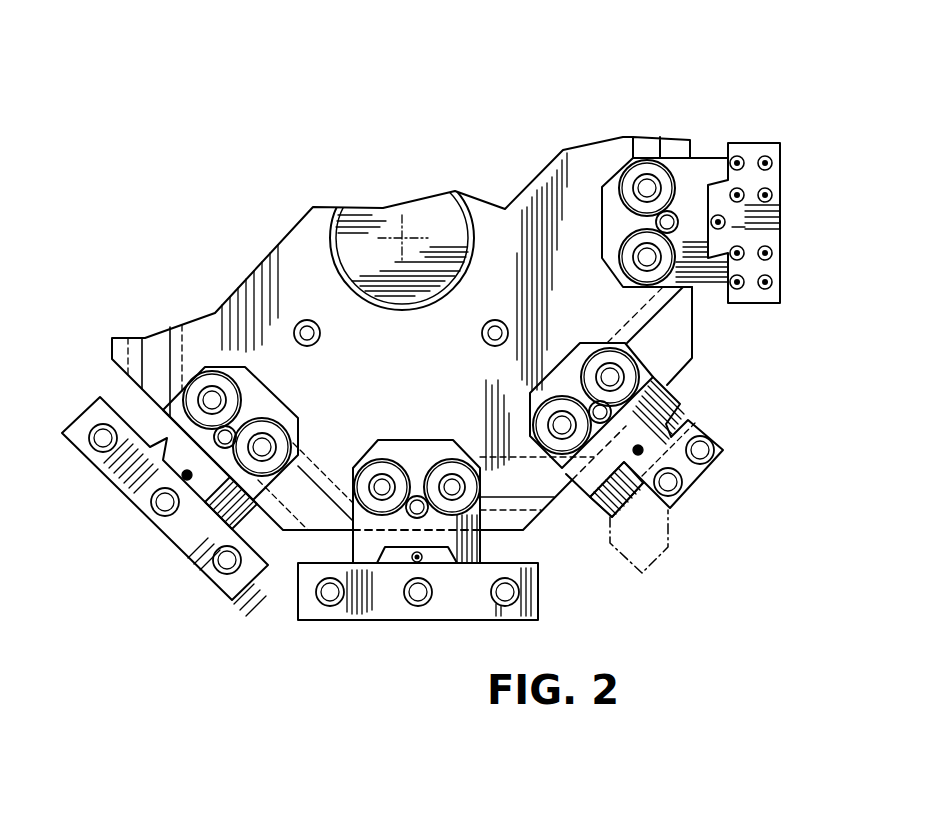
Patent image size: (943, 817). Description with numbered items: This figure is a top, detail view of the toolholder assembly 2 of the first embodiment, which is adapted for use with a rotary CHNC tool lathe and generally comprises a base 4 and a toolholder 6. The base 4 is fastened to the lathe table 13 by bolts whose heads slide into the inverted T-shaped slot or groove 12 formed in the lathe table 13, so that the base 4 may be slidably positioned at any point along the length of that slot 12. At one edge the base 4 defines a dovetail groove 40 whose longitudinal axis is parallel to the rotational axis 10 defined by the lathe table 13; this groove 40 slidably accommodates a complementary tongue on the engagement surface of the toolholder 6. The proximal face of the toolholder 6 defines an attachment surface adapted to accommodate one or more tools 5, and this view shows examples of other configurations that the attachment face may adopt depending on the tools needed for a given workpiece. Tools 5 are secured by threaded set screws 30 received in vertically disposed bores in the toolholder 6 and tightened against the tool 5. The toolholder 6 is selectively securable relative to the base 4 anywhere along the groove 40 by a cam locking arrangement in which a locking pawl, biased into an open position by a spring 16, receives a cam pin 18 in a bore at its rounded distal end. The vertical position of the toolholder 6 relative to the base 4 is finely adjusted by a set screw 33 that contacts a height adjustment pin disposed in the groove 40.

The toolholder assembly 2 is at (646, 122).
The base 4 is at (697, 182).
The tool 5 is at (650, 547).
The toolholder 6 is at (777, 223).
The rotational axis 10 is at (402, 238).
The slot or groove 12 is at (663, 325).
The lathe table 13 is at (302, 263).
The spring 16 is at (443, 468).
The cam pin 18 is at (415, 512).
The set screw 30 is at (227, 562).
The set screw 33 is at (183, 475).
The dovetail groove 40 is at (205, 508).